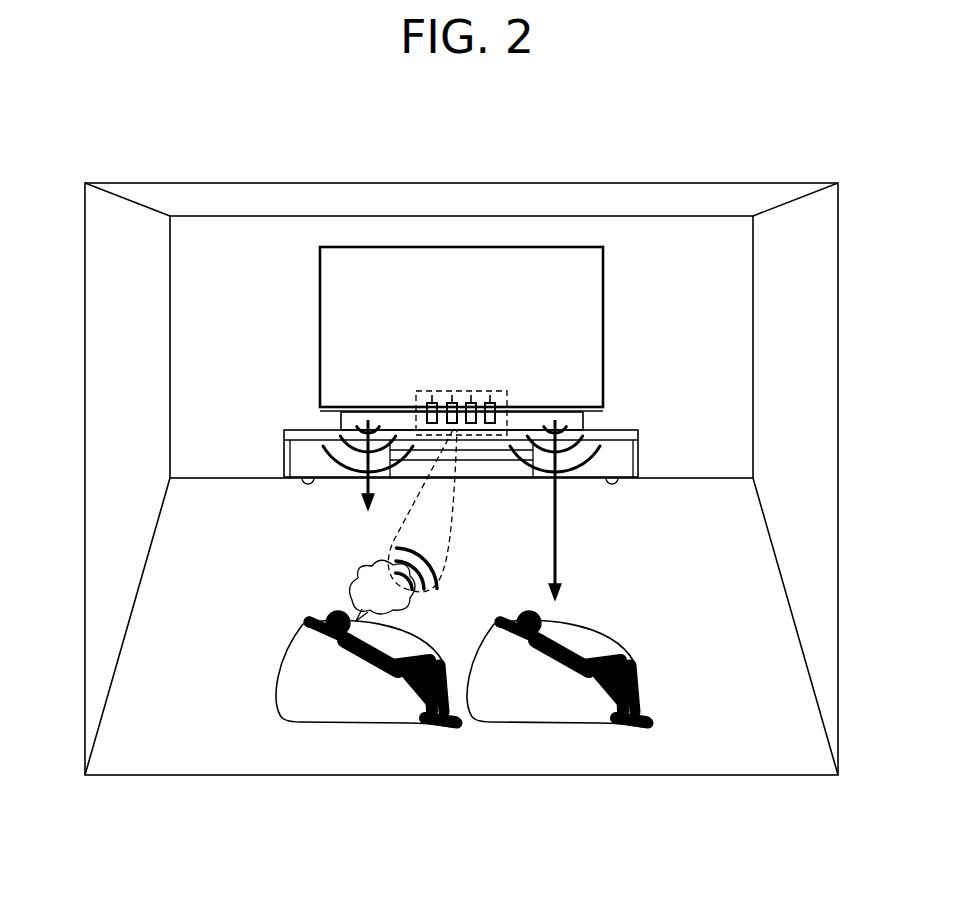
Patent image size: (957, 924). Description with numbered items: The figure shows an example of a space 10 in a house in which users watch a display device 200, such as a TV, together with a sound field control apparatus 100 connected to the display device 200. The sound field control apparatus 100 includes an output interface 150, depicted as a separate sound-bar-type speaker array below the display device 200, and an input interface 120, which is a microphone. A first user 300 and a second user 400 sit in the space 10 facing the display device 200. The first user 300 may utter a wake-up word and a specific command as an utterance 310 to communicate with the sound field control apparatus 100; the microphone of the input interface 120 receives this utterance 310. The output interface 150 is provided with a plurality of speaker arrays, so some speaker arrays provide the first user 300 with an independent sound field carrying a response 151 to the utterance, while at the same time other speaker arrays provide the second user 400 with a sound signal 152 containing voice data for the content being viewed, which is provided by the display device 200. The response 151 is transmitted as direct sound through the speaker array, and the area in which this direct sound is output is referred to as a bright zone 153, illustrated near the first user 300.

The space 10 is at (272, 183).
The sound field control apparatus 100 is at (533, 412).
The input interface 120 is at (451, 404).
The output interface 150 is at (350, 424).
The response 151 is at (360, 490).
The sound signal 152 is at (558, 530).
The bright zone 153 is at (406, 530).
The display device 200 is at (493, 247).
The first user 300 is at (335, 708).
The utterance 310 is at (350, 590).
The second user 400 is at (550, 708).